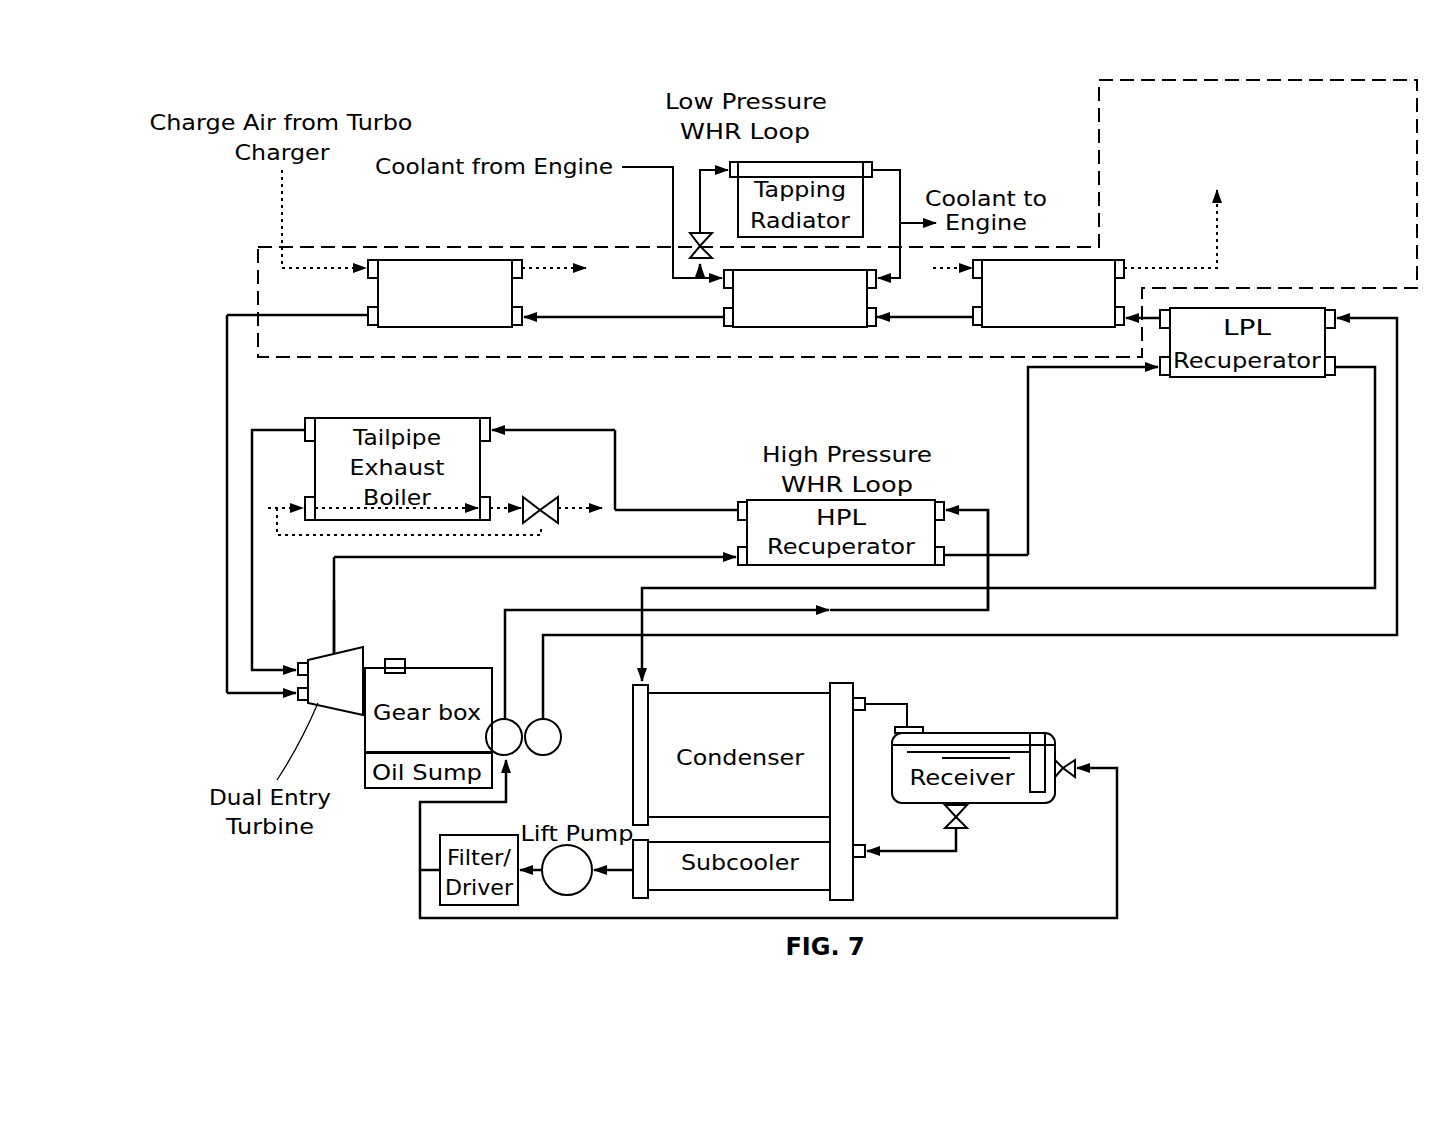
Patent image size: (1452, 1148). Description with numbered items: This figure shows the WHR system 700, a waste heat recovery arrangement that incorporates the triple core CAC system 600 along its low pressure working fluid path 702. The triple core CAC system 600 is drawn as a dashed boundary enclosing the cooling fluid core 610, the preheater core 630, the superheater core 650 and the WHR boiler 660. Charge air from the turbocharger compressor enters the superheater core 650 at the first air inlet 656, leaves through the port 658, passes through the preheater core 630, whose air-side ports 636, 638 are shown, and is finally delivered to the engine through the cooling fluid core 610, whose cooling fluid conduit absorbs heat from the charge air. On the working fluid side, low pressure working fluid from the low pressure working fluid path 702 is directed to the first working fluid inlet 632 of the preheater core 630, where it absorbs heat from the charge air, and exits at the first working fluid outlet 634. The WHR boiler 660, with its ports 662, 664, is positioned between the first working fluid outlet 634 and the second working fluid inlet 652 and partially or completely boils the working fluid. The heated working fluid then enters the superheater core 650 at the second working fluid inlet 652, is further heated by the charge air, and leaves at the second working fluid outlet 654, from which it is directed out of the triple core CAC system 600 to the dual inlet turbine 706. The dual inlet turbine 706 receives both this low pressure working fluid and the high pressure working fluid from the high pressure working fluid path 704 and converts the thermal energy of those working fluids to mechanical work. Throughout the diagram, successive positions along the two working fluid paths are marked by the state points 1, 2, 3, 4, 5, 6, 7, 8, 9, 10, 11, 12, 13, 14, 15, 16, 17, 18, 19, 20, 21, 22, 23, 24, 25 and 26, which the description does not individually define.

The WHR system 700 is at (363, 100).
The triple core CAC system 600 is at (1182, 75).
The cooling fluid core 610 is at (1288, 190).
The preheater core 630 is at (1028, 310).
The first working fluid inlet 632 is at (1122, 324).
The first working fluid outlet 634 is at (977, 326).
The heat exchanger port 636 is at (980, 275).
The heat exchanger port 638 is at (1122, 262).
The superheater core 650 is at (423, 305).
The second working fluid inlet 652 is at (513, 327).
The second working fluid outlet 654 is at (372, 325).
The first air inlet 656 is at (375, 262).
The heat exchanger port 658 is at (517, 265).
The WHR boiler 660 is at (778, 310).
The heat exchanger port 662 is at (873, 326).
The heat exchanger port 664 is at (728, 326).
The low pressure working fluid path 702 is at (1243, 637).
The high pressure working fluid path 704 is at (988, 542).
The dual inlet turbine 706 is at (345, 702).
The pump 1 is at (546, 722).
The pump 2 is at (657, 682).
The state point 3 is at (1143, 339).
The state point 4 is at (909, 546).
The state point 5 is at (925, 334).
The state point 6 is at (855, 332).
The state point 7 is at (800, 314).
The state point 8 is at (699, 308).
The state point 9 is at (624, 334).
The state point 10 is at (297, 332).
The state point 11 is at (207, 504).
The state point 12 is at (261, 712).
The state point 13 is at (357, 605).
The state point 14 is at (535, 572).
The state point 15 is at (986, 571).
The state point 16 is at (1008, 524).
The state point 17 is at (669, 743).
The state point 18 is at (819, 780).
The state point 19 is at (768, 843).
The state point 20 is at (676, 497).
The state point 21 is at (645, 470).
The state point 22 is at (553, 446).
The state point 23 is at (455, 417).
The state point 24 is at (331, 417).
The state point 25 is at (278, 550).
The state point 26 is at (373, 626).